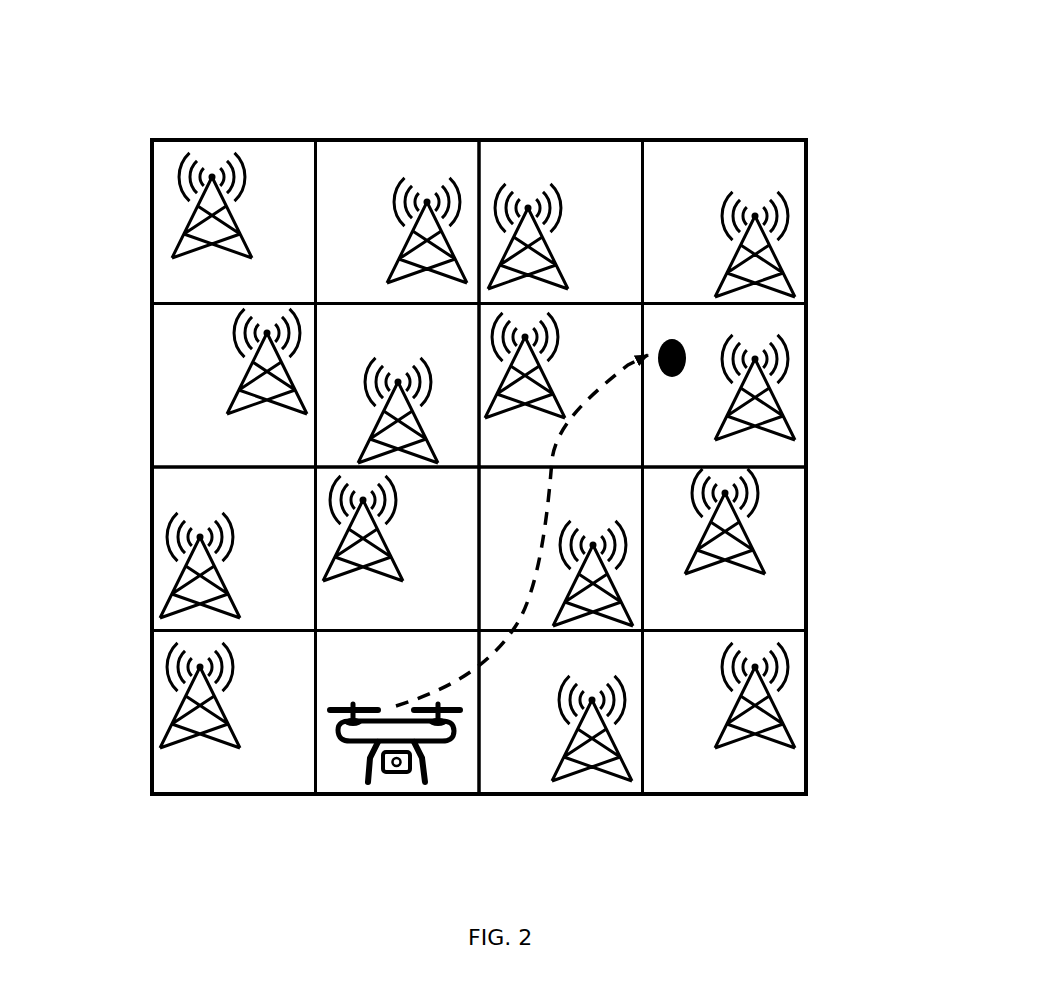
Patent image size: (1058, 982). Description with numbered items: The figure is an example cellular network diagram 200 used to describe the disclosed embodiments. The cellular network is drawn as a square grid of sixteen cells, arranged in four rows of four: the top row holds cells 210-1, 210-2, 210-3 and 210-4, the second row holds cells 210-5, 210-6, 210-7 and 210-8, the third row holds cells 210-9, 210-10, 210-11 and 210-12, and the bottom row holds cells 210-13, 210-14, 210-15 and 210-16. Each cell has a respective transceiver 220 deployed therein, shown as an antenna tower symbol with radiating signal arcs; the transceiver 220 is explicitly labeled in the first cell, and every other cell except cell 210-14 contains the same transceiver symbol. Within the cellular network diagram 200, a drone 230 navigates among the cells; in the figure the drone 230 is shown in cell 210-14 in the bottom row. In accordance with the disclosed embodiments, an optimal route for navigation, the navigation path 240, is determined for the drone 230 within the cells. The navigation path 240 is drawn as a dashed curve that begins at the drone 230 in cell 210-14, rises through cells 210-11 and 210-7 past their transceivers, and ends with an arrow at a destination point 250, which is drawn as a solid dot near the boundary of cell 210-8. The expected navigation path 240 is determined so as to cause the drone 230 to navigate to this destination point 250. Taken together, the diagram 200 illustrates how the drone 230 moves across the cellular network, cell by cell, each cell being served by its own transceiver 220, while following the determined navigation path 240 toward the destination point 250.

The cellular network diagram 200 is at (735, 73).
The cell 210-1 is at (190, 177).
The cell 210-2 is at (413, 136).
The cell 210-3 is at (568, 136).
The cell 210-4 is at (810, 178).
The cell 210-5 is at (147, 369).
The cell 210-6 is at (398, 386).
The cell 210-7 is at (561, 386).
The cell 210-8 is at (810, 348).
The cell 210-9 is at (147, 511).
The cell 210-10 is at (398, 549).
The cell 210-11 is at (561, 549).
The cell 210-12 is at (810, 505).
The cell 210-13 is at (147, 669).
The cell 210-14 is at (386, 744).
The cell 210-15 is at (561, 713).
The cell 210-16 is at (811, 656).
The transceiver 220 is at (176, 227).
The drone 230 is at (352, 742).
The navigation path 240 is at (536, 541).
The destination point 250 is at (672, 336).